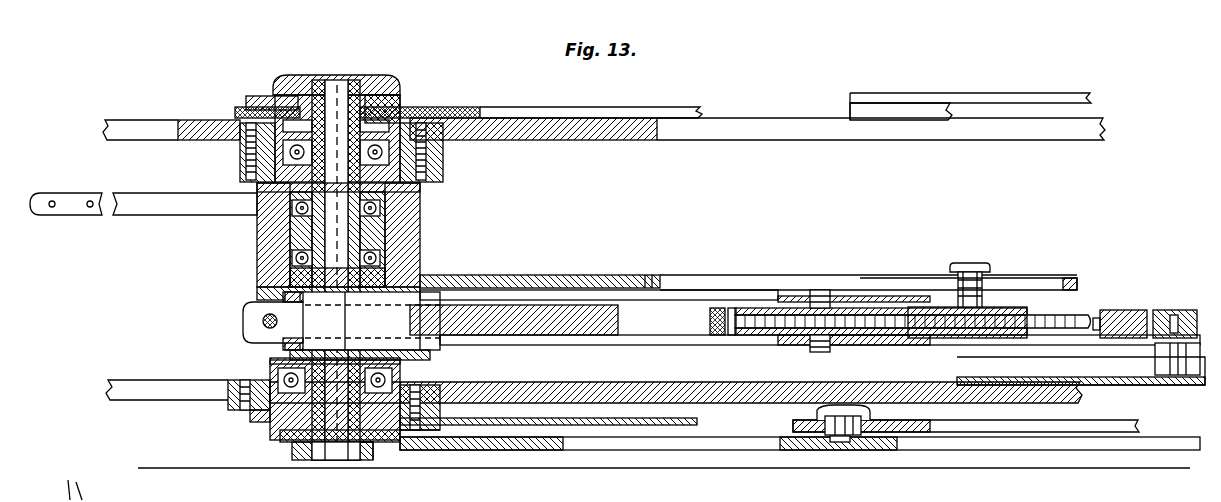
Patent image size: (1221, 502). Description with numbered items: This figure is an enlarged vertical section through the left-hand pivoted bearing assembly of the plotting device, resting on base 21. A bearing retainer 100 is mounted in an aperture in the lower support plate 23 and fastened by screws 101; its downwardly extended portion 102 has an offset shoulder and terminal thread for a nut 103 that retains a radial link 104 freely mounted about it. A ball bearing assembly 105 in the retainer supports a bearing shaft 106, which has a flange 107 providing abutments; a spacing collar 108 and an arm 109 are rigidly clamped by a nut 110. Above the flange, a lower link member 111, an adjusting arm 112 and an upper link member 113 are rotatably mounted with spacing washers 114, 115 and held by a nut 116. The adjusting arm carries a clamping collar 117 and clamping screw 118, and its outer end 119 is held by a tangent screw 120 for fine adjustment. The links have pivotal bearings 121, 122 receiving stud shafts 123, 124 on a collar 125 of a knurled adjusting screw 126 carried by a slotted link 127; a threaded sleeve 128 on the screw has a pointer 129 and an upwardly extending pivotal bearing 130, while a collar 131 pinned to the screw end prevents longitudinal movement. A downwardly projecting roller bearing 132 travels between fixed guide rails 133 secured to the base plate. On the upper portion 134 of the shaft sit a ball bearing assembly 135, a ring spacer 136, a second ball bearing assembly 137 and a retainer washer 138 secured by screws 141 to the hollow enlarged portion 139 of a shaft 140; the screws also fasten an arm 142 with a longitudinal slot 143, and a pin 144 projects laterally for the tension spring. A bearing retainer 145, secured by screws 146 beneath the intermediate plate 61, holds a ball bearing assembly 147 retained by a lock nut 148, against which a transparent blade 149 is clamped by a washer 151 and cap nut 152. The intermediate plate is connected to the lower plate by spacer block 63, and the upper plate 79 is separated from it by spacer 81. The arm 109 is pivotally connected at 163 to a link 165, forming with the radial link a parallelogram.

The base plate 21 is at (185, 466).
The lower support plate 23 is at (598, 358).
The intermediate plate 61 is at (200, 120).
The spacer block 63 is at (830, 450).
The upper plate 79 is at (918, 100).
The spacer 81 is at (850, 110).
The bearing retainer 100 is at (228, 408).
The screws 101 is at (412, 380).
The downwardly extended portion 102 is at (285, 442).
The nut 103 is at (262, 422).
The radial link 104 is at (632, 426).
The ball bearing assembly 105 is at (270, 362).
The bearing shaft 106 is at (338, 460).
The flange 107 is at (290, 355).
The spacing collar 108 is at (410, 440).
The arm 109 is at (710, 450).
The nut 110 is at (366, 460).
The lower link member 111 is at (668, 346).
The adjusting arm 112 is at (505, 280).
The upper link member 113 is at (693, 298).
The spacing washer 114 is at (283, 296).
The spacing washer 115 is at (283, 344).
The nut 116 is at (362, 321).
The clamping collar 117 is at (250, 308).
The clamping screw 118 is at (262, 321).
The outer end 119 is at (618, 305).
The tangent screw 120 is at (545, 346).
The pivotal bearing 121 is at (810, 296).
The pivotal bearing 122 is at (800, 348).
The stud shaft 123 is at (822, 290).
The stud shaft 124 is at (820, 352).
The collar 125 is at (858, 308).
The knurled adjusting screw 126 is at (710, 322).
The slotted link 127 is at (888, 315).
The threaded sleeve 128 is at (940, 338).
The pointer 129 is at (965, 263).
The pivotal bearing 130 is at (982, 285).
The collar 131 is at (1135, 310).
The roller bearing 132 is at (1170, 375).
The guide rails 133 is at (1110, 375).
The upper portion 134 is at (395, 215).
The ball bearing assembly 135 is at (420, 258).
The ring spacer 136 is at (380, 238).
The second ball bearing assembly 137 is at (257, 228).
The retainer washer 138 is at (290, 258).
The hollow enlarged portion 139 is at (400, 228).
The shaft 140 is at (372, 100).
The screws 141 is at (270, 292).
The arm 142 is at (600, 275).
The longitudinal slot 143 is at (1030, 290).
The pin 144 is at (136, 200).
The bearing retainer 145 is at (246, 168).
The screws 146 is at (240, 150).
The ball bearing assembly 147 is at (430, 150).
The lock nut 148 is at (410, 112).
The transparent blade 149 is at (530, 98).
The washer 151 is at (265, 96).
The cap nut 152 is at (340, 80).
The pivotal connection 163 is at (840, 439).
The link 165 is at (982, 432).